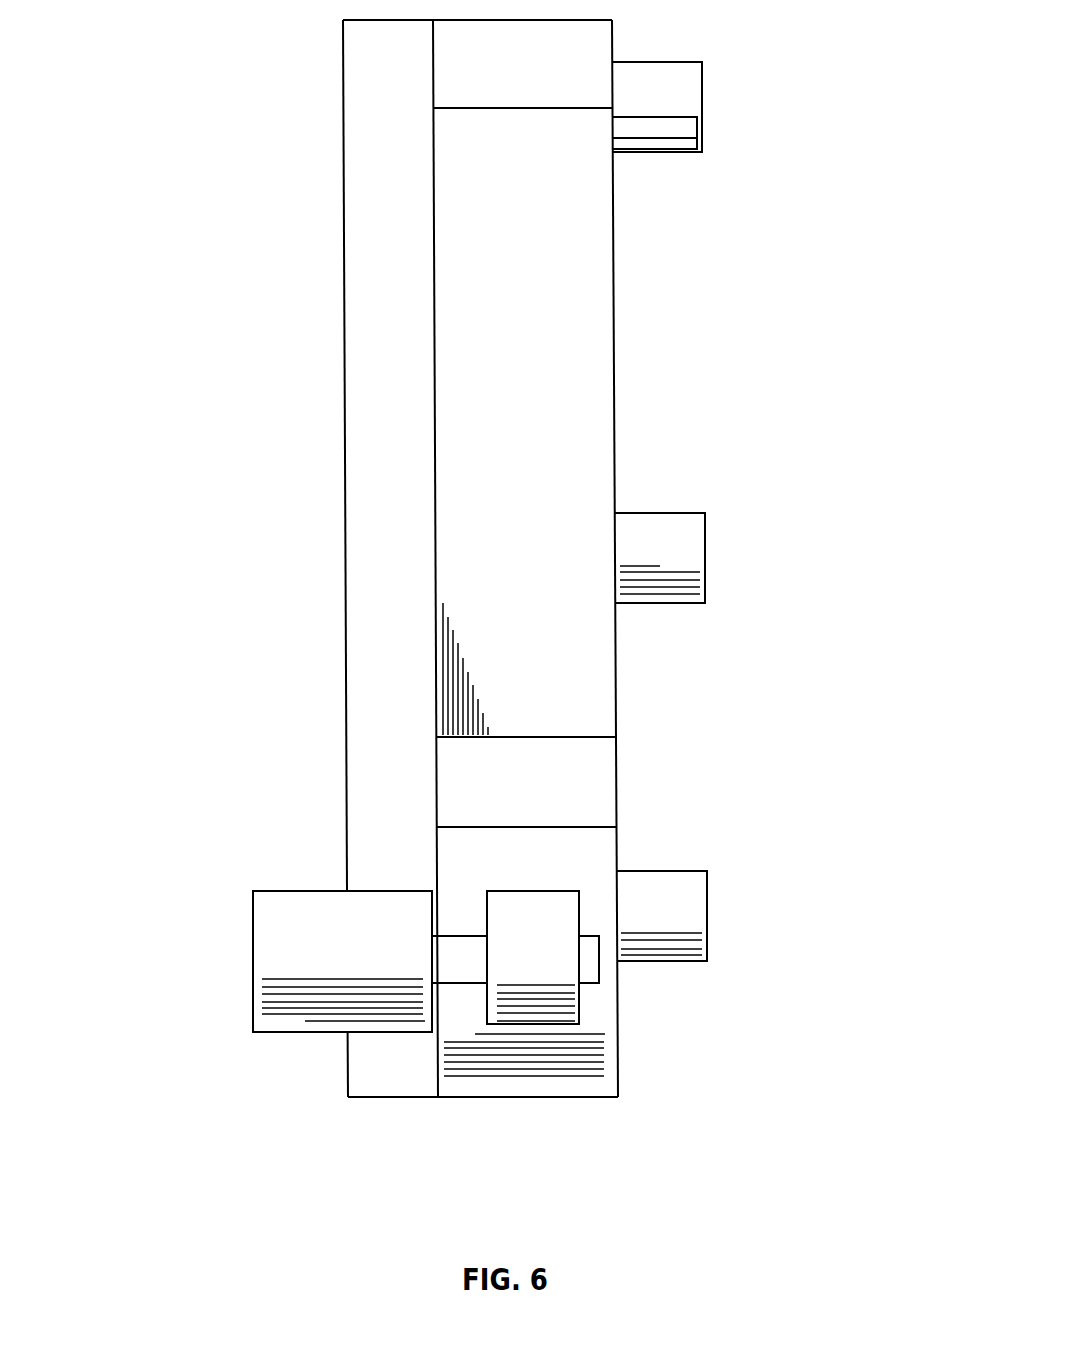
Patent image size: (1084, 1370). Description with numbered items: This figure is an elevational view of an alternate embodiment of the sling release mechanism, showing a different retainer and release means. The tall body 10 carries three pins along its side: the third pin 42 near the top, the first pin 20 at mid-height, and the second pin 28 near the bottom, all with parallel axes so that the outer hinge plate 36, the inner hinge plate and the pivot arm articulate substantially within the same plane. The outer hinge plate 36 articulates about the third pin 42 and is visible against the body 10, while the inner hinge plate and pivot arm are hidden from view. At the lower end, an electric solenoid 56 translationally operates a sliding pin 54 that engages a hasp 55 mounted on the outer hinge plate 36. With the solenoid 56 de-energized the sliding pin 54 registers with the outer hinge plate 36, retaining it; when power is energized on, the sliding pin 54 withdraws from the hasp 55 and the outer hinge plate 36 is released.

The body 10 is at (378, 328).
The outer hinge plate 36 is at (502, 592).
The third pin 42 is at (650, 96).
The first pin 20 is at (665, 553).
The second pin 28 is at (679, 916).
The electric solenoid 56 is at (332, 960).
The sliding pin 54 is at (459, 964).
The hasp 55 is at (539, 970).